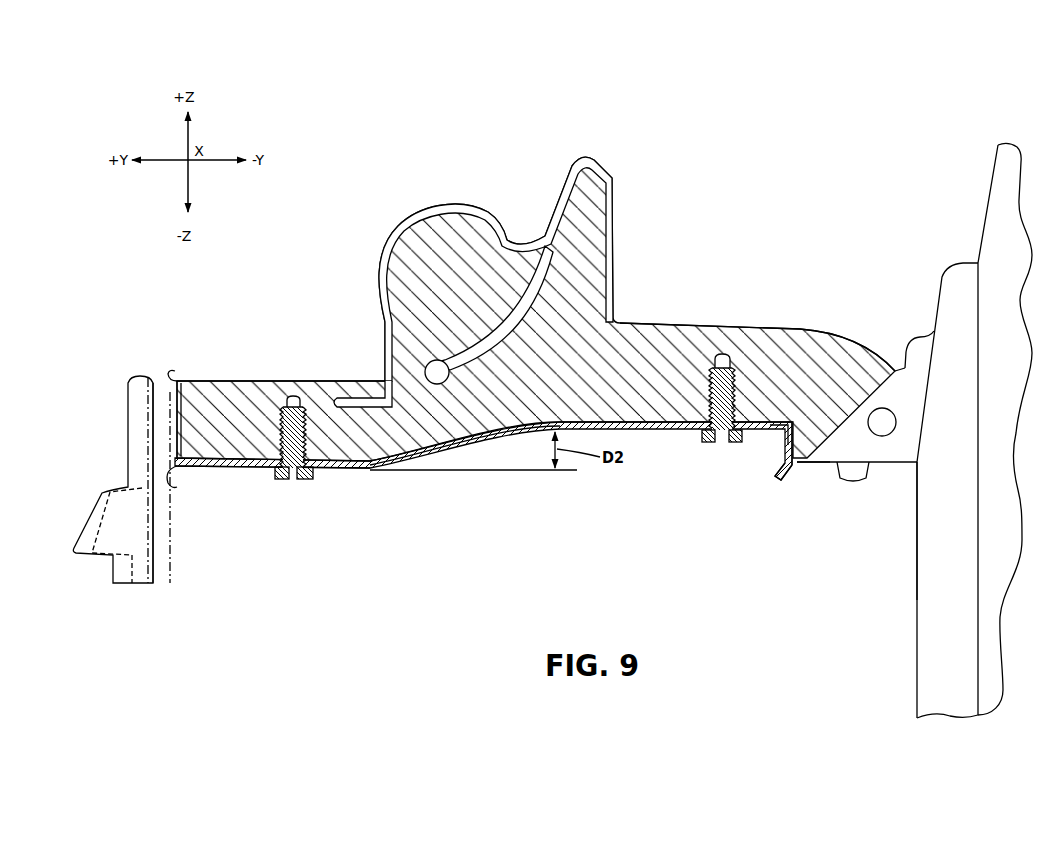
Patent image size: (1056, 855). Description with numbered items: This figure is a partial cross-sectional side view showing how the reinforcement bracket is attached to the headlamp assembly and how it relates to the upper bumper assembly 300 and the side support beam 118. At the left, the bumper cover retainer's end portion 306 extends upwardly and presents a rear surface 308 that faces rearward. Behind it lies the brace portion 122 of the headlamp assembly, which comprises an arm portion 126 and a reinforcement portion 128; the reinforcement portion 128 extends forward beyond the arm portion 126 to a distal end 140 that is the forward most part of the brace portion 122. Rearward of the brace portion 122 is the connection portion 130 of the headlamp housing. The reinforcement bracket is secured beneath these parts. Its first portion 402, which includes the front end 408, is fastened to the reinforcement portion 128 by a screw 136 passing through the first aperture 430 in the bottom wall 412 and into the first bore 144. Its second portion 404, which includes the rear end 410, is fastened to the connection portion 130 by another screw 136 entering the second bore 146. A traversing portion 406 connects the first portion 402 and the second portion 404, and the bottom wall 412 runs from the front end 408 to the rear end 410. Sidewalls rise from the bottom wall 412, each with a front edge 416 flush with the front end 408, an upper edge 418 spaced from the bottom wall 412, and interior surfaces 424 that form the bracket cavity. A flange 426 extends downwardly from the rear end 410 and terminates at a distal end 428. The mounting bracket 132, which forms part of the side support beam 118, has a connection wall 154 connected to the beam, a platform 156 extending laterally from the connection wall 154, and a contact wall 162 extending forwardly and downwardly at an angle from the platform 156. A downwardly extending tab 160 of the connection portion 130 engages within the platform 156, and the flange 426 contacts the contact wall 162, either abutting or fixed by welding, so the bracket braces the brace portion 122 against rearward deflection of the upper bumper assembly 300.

The side support beam 118 is at (975, 200).
The brace portion 122 is at (466, 275).
The arm portion 126 is at (490, 200).
The reinforcement portion 128 is at (262, 385).
The connection portion 130 is at (810, 340).
The mounting bracket 132 is at (875, 449).
The screw 136 is at (300, 490).
The distal end 140 is at (175, 433).
The first bore 144 is at (290, 436).
The second bore 146 is at (724, 356).
The connection wall 154 is at (915, 352).
The platform 156 is at (891, 465).
The downwardly extending tab 160 is at (851, 482).
The contact wall 162 is at (794, 474).
The upper bumper assembly 300 is at (145, 448).
The end portion 306 is at (138, 393).
The rear surface 308 is at (153, 543).
The first portion 402 is at (215, 372).
The second portion 404 is at (693, 434).
The traversing portion 406 is at (504, 492).
The front end 408 is at (173, 482).
The rear end 410 is at (773, 436).
The bottom wall 412 is at (217, 468).
The front edge 416 is at (163, 368).
The upper edge 418 is at (320, 385).
The interior surface 424 is at (188, 385).
The flange 426 is at (787, 447).
The distal end 428 is at (780, 472).
The first aperture 430 is at (279, 481).